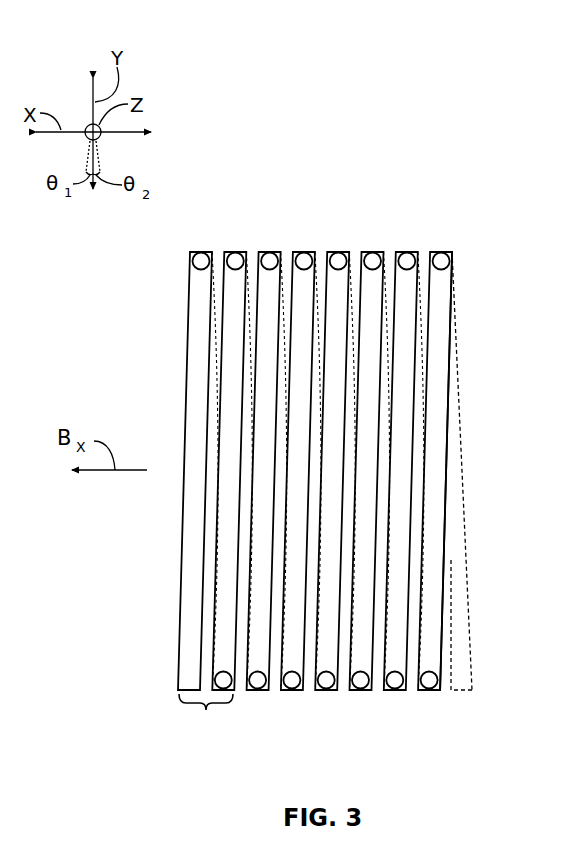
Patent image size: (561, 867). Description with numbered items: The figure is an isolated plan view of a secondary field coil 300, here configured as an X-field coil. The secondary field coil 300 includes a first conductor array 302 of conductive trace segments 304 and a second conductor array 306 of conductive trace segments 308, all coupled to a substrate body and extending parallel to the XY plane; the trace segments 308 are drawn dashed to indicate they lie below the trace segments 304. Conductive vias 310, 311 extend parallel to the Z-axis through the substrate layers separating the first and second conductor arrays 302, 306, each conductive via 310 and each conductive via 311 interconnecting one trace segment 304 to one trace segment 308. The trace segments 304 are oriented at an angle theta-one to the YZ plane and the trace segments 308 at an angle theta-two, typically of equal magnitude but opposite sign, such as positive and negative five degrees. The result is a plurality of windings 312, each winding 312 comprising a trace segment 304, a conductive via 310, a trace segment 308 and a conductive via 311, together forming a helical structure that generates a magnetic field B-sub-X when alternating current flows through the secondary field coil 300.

The secondary field coil 300 is at (452, 208).
The first conductor array 302 is at (457, 306).
The conductive trace segments 304 is at (197, 283).
The second conductor array 306 is at (472, 545).
The conductive trace segments 308 is at (468, 645).
The conductive via 310 is at (303, 262).
The conductive via 311 is at (428, 682).
The winding 312 is at (206, 712).